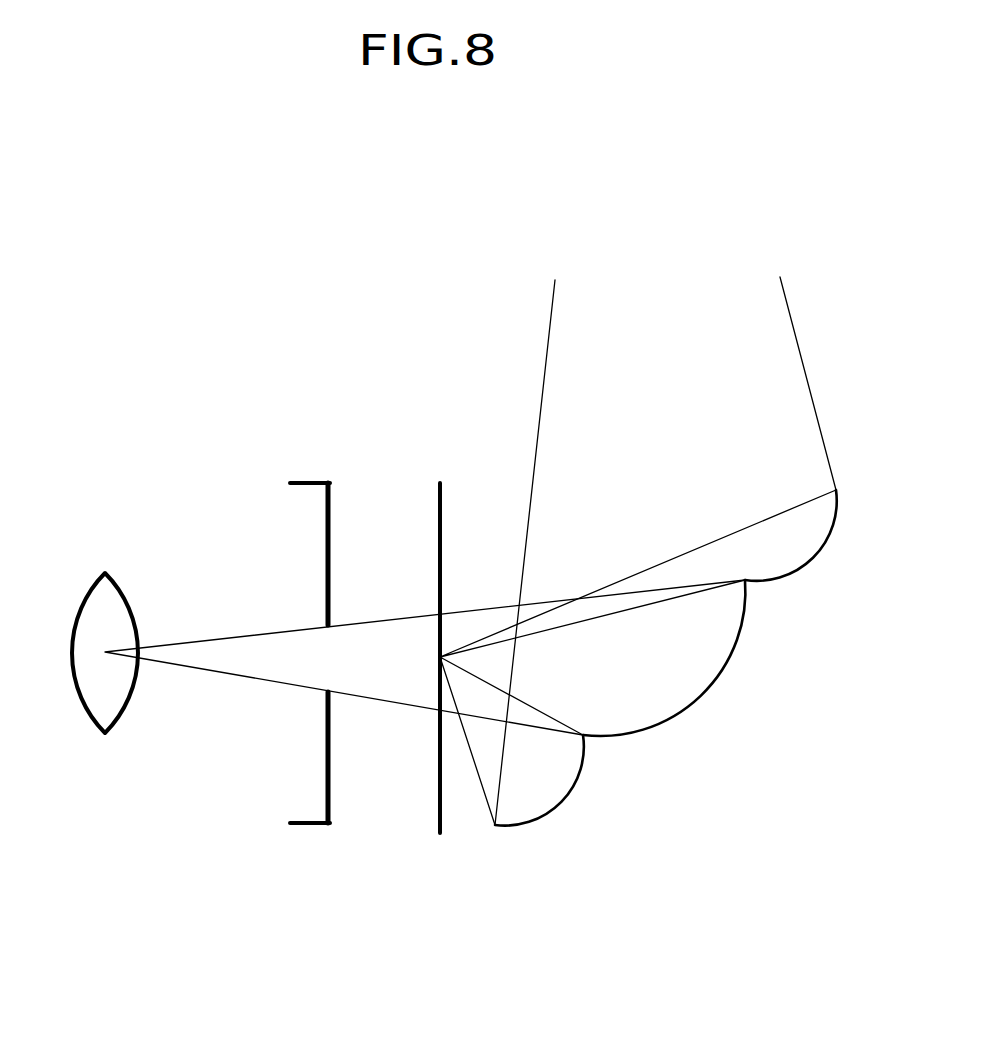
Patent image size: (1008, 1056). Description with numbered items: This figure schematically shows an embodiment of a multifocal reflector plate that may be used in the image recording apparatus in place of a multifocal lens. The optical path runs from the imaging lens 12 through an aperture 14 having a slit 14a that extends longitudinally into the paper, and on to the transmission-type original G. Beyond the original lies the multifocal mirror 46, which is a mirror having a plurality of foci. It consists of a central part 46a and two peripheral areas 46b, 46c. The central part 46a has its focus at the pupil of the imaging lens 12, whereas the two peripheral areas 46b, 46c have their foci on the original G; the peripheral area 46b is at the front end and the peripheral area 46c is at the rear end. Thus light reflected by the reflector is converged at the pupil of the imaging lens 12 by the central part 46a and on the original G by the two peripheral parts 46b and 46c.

The imaging lens 12 is at (84, 598).
The aperture 14 is at (327, 510).
The slit 14a is at (317, 705).
The transmission-type original G is at (437, 527).
The multifocal mirror 46 is at (691, 697).
The central part 46a is at (645, 730).
The peripheral area 46b is at (533, 822).
The peripheral area 46c is at (797, 567).